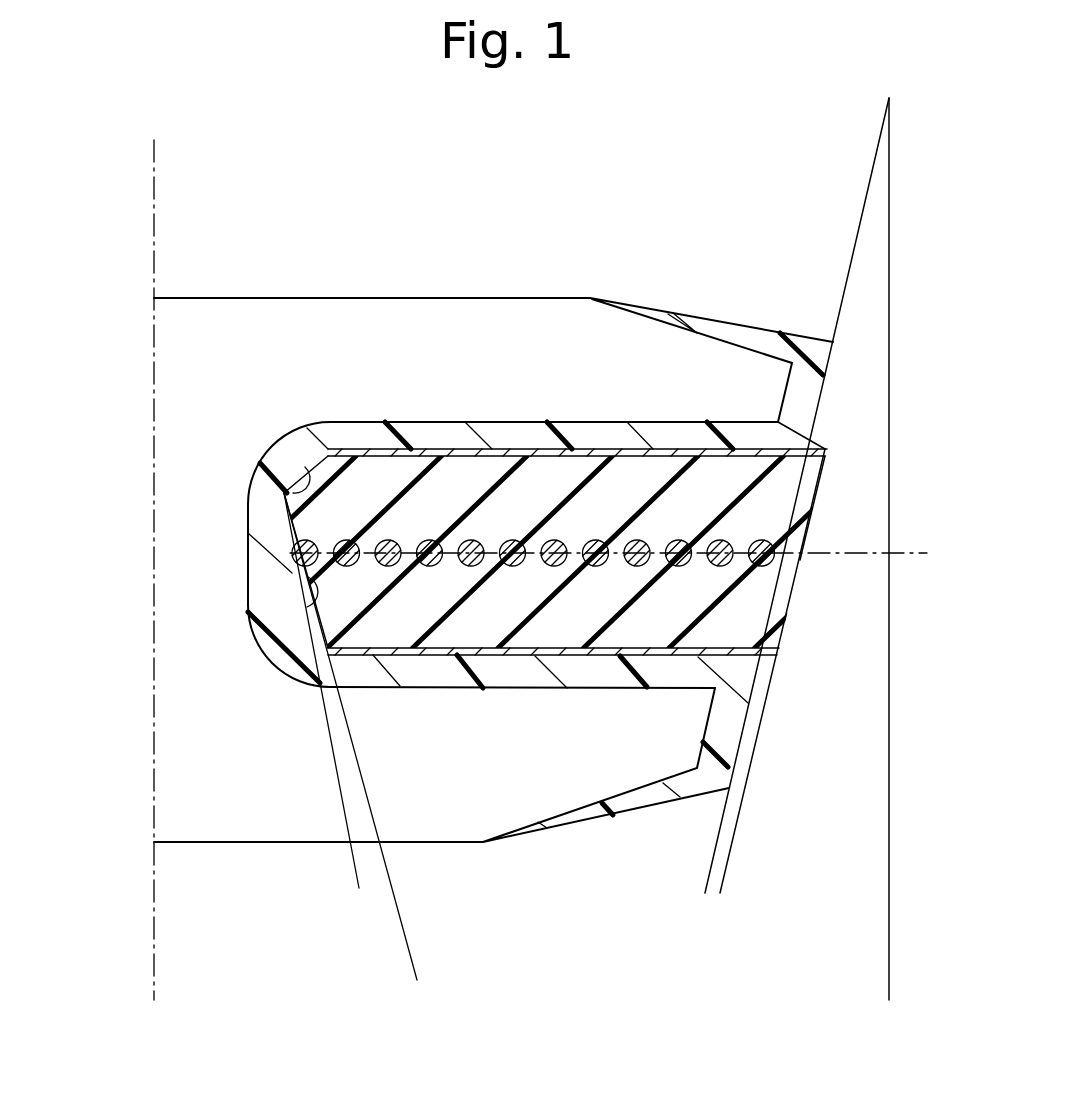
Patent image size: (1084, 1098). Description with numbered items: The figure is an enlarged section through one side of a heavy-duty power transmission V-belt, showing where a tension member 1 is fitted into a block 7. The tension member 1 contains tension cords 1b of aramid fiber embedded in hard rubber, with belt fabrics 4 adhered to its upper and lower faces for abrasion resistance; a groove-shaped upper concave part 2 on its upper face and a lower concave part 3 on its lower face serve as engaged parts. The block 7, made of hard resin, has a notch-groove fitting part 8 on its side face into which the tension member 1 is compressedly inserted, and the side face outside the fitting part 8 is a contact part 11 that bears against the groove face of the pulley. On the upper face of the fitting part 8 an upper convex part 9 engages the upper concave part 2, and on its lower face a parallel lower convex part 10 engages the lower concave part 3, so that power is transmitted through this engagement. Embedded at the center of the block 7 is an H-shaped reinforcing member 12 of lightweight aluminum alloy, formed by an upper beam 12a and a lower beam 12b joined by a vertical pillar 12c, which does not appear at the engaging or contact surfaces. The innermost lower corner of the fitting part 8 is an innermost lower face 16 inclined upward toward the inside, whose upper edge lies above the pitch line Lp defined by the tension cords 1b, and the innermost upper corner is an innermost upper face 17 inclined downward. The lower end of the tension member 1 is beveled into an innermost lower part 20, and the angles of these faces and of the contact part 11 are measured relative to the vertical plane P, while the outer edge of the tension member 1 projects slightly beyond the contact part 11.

The tension member 1 is at (828, 471).
The tension cord 1b is at (767, 560).
The upper concave part 2 is at (530, 449).
The lower concave part 3 is at (498, 838).
The belt fabric 4 is at (812, 448).
The block 7 is at (262, 296).
The fitting part 8 is at (748, 463).
The upper convex part 9 is at (712, 460).
The lower convex part 10 is at (655, 650).
The contact part 11 is at (833, 352).
The reinforcing member 12 is at (665, 322).
The upper beam 12a is at (372, 320).
The lower beam 12b is at (212, 832).
The pillar 12c is at (172, 592).
The innermost lower face 16 is at (293, 573).
The innermost upper face 17 is at (287, 494).
The innermost lower part 20 is at (320, 615).
The vertical plane P is at (892, 813).
The pitch line Lp is at (908, 548).